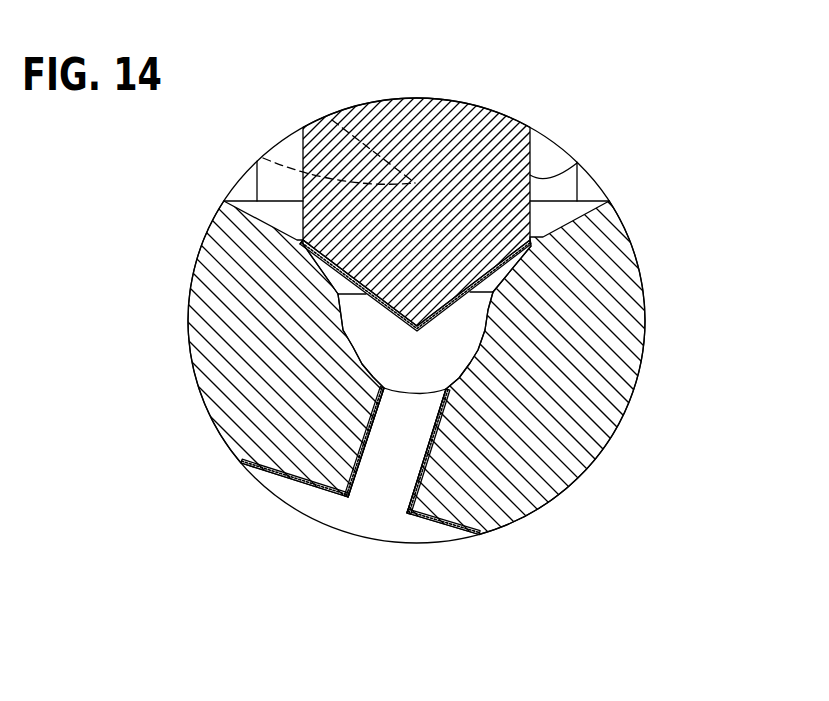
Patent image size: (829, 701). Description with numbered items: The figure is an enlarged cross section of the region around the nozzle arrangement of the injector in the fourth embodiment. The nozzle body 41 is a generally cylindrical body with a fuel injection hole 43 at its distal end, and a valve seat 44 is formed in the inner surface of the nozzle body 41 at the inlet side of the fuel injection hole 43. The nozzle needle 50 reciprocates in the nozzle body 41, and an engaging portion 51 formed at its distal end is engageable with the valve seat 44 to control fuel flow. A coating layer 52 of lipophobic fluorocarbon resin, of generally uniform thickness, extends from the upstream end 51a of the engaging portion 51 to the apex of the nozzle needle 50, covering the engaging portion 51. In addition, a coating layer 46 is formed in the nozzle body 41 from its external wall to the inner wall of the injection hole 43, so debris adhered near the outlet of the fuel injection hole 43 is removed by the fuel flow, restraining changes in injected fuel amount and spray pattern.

The nozzle body 41 is at (612, 280).
The fuel injection hole 43 is at (373, 487).
The valve seat 44 is at (302, 250).
The coating layer 46 is at (270, 477).
The nozzle needle 50 is at (362, 128).
The engaging portion 51 is at (327, 269).
The upstream end of the engaging portion 51a is at (293, 242).
The coating layer 52 is at (360, 296).